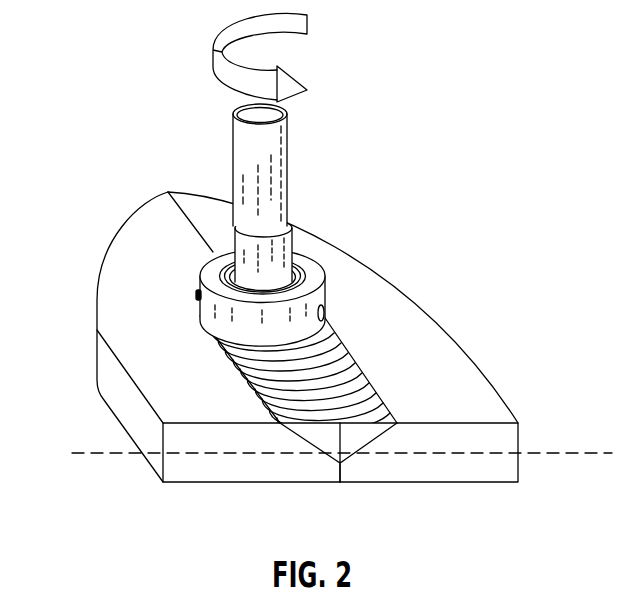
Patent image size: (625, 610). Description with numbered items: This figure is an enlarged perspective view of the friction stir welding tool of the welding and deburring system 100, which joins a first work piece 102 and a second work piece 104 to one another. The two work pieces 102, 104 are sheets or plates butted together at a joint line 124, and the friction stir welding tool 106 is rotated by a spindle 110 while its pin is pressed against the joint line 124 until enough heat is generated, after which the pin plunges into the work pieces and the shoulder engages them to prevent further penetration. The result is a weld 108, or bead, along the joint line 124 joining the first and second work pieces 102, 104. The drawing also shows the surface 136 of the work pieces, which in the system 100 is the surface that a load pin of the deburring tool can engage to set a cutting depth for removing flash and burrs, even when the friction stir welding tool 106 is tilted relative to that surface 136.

The welding and deburring system 100 is at (489, 73).
The first work piece 102 is at (110, 303).
The second work piece 104 is at (463, 387).
The friction stir welding tool 106 is at (290, 158).
The weld 108 is at (372, 387).
The spindle 110 is at (293, 238).
The joint line 124 is at (333, 450).
The surface 136 is at (340, 362).